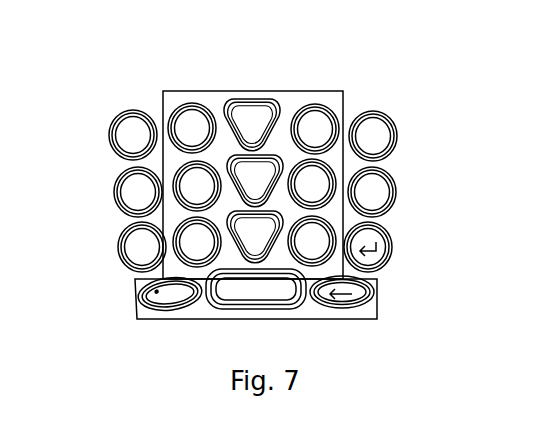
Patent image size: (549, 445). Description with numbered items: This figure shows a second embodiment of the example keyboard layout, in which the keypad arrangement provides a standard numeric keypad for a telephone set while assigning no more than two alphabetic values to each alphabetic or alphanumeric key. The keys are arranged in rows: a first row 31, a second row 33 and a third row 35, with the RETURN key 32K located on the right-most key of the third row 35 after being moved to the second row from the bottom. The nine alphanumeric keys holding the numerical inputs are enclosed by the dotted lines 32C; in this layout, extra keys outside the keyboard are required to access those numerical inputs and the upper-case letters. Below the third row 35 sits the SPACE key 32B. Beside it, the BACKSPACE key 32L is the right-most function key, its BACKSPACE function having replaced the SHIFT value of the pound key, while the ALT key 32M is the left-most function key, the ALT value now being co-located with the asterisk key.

The first row 31 is at (108, 105).
The second row 33 is at (108, 163).
The third row 35 is at (108, 218).
The dotted lines 32C is at (338, 86).
The RETURN key 32K is at (388, 236).
The BACKSPACE key 32L is at (374, 286).
The ALT key 32M is at (136, 300).
The SPACE key 32B is at (257, 309).